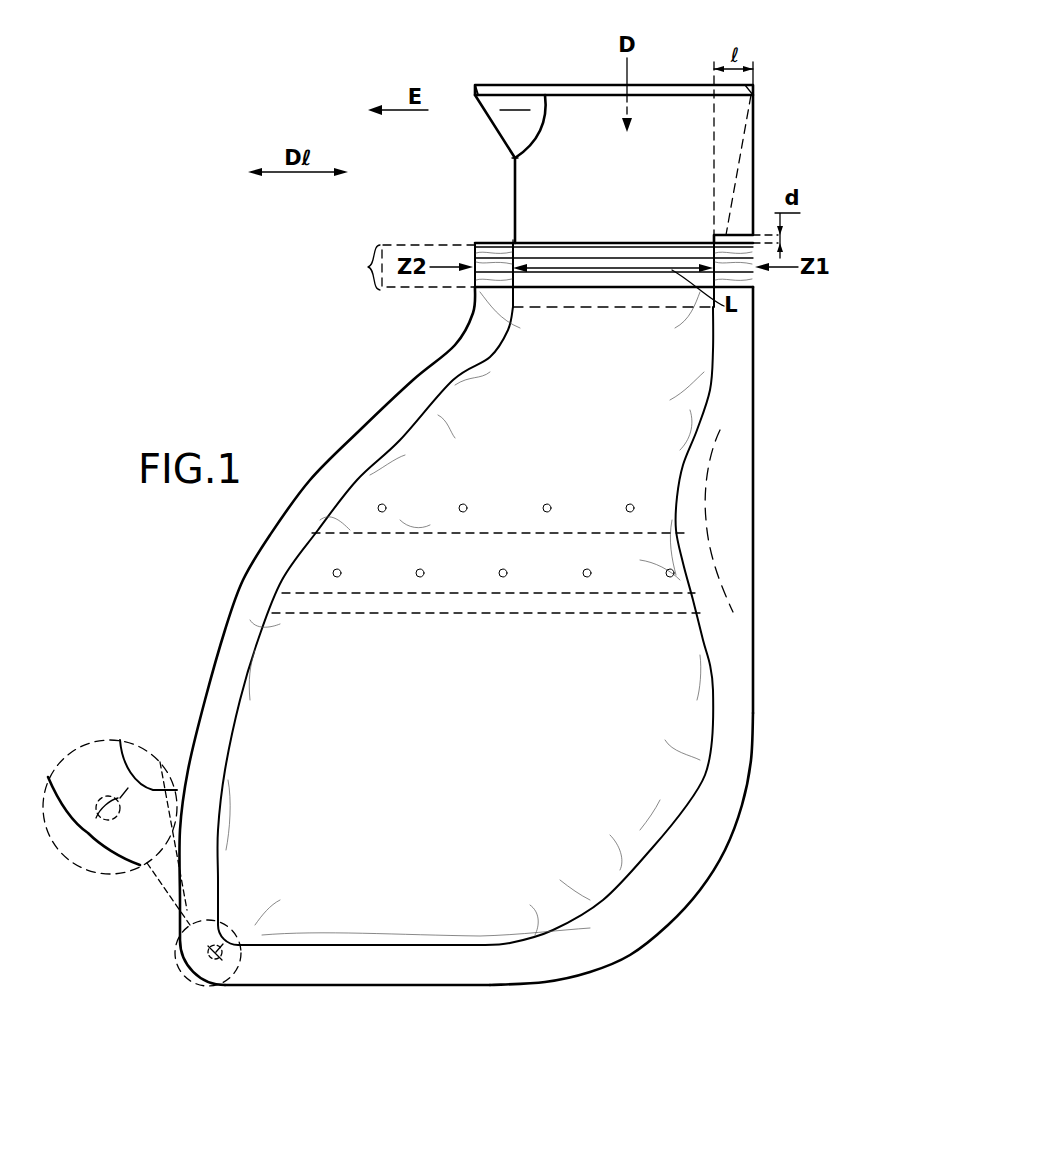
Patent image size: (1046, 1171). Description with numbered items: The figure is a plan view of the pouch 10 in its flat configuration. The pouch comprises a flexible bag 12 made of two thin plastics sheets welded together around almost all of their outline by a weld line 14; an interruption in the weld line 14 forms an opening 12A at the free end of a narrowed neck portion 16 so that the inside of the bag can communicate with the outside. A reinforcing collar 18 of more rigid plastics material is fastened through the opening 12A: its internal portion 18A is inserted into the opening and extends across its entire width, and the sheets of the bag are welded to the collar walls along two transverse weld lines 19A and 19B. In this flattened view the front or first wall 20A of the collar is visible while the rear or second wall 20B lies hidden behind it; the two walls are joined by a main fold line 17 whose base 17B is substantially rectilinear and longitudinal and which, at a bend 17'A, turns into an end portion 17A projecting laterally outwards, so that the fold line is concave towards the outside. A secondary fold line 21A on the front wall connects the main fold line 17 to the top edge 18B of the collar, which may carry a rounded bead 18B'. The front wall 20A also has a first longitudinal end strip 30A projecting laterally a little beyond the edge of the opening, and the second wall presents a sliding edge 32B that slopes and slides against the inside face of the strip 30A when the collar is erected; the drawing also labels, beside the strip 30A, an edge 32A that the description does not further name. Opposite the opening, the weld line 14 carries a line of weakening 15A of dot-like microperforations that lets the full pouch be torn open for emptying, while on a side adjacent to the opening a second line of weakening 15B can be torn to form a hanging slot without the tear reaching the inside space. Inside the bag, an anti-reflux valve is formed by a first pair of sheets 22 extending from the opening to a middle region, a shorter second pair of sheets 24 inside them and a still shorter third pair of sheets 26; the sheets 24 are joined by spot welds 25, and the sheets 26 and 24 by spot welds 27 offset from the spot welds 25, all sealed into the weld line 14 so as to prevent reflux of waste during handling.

The pouch 10 is at (372, 348).
The flexible bag 12 is at (465, 626).
The opening 12A is at (597, 243).
The weld line 14 is at (268, 570).
The line of weakening 15A is at (100, 790).
The line of weakening 15B is at (707, 508).
The neck portion 16 is at (408, 267).
The main fold line 17 is at (485, 200).
The end portion of main fold line 17A is at (492, 126).
The bend 17'A is at (463, 168).
The base of main fold line 17B is at (513, 243).
The reinforcing collar 18 is at (445, 86).
The internal portion of collar 18A is at (617, 307).
The top edge of collar 18B is at (670, 67).
The rounded bead 18B' is at (592, 67).
The weld line 19A is at (652, 256).
The weld line 19B is at (567, 290).
The front wall of collar 20A is at (548, 106).
The rear wall of collar 20B is at (505, 85).
The secondary fold line 21A is at (528, 135).
The first pair of sheets 22 is at (433, 603).
The second pair of sheets 24 is at (522, 578).
The spot welds 25 is at (593, 572).
The third pair of sheets 26 is at (520, 525).
The spot welds 27 is at (630, 505).
The first longitudinal end strip 30A is at (755, 90).
The right lateral edge 32A is at (754, 130).
The sliding edge 32B is at (745, 165).